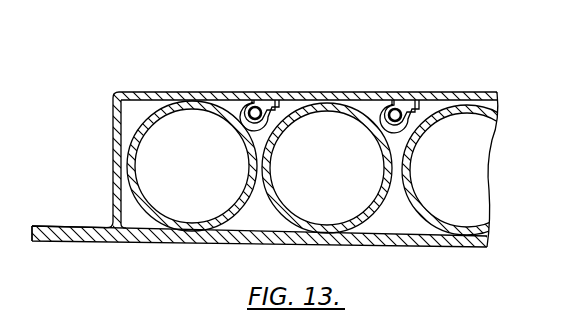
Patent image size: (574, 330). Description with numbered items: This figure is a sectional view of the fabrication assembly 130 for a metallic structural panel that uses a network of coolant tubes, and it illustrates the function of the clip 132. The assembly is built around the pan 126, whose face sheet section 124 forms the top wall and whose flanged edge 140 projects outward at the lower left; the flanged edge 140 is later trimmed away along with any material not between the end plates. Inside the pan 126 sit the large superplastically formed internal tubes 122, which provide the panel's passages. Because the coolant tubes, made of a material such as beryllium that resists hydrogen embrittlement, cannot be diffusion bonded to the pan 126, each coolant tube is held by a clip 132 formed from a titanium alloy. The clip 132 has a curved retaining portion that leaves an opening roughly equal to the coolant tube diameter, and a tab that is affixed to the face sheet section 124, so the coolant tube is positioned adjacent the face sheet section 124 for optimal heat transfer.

The fabrication assembly 130 is at (287, 162).
The face sheet section 124 is at (342, 92).
The pan 126 is at (391, 247).
The flanged edge 140 is at (46, 225).
The internal tubes 122 is at (287, 93).
The clip 132 is at (388, 140).